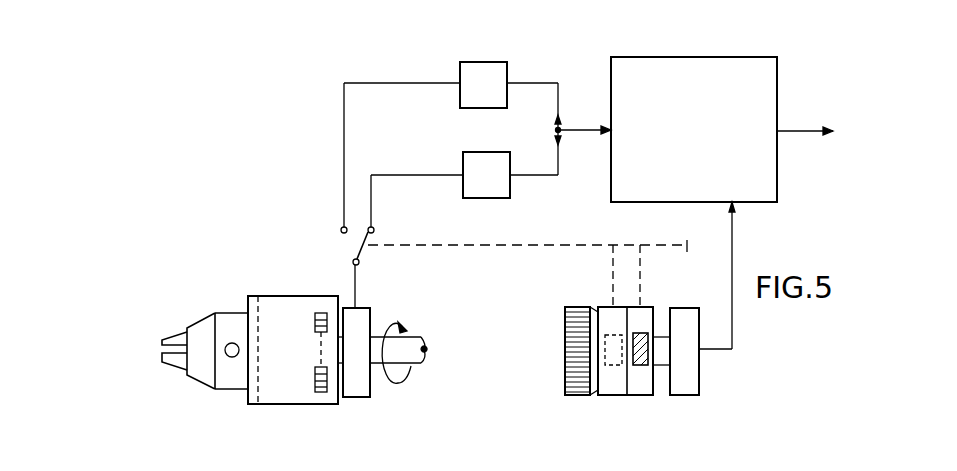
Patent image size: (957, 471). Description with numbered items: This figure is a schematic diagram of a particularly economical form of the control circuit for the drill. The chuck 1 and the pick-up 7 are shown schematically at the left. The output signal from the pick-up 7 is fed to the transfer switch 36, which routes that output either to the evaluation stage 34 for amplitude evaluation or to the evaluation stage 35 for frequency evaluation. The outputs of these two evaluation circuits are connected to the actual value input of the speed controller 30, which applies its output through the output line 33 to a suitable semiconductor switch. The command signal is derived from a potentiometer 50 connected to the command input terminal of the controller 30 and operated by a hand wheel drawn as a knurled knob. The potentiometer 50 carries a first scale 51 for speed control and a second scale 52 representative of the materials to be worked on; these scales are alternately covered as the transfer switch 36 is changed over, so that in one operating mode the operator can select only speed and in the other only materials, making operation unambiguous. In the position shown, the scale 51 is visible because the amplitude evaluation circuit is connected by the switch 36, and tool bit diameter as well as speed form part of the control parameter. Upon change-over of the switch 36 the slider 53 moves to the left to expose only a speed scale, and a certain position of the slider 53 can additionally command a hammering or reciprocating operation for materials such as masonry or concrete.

The chuck 1 is at (290, 399).
The pick-up 7 is at (361, 399).
The speed controller 30 is at (687, 70).
The output line 33 is at (801, 130).
The evaluation stage 34 is at (486, 162).
The evaluation stage 35 is at (482, 72).
The transfer switch 36 is at (361, 247).
The potentiometer 50 is at (690, 376).
The first scale 51 is at (650, 396).
The second scale 52 is at (600, 380).
The slider 53 is at (645, 333).